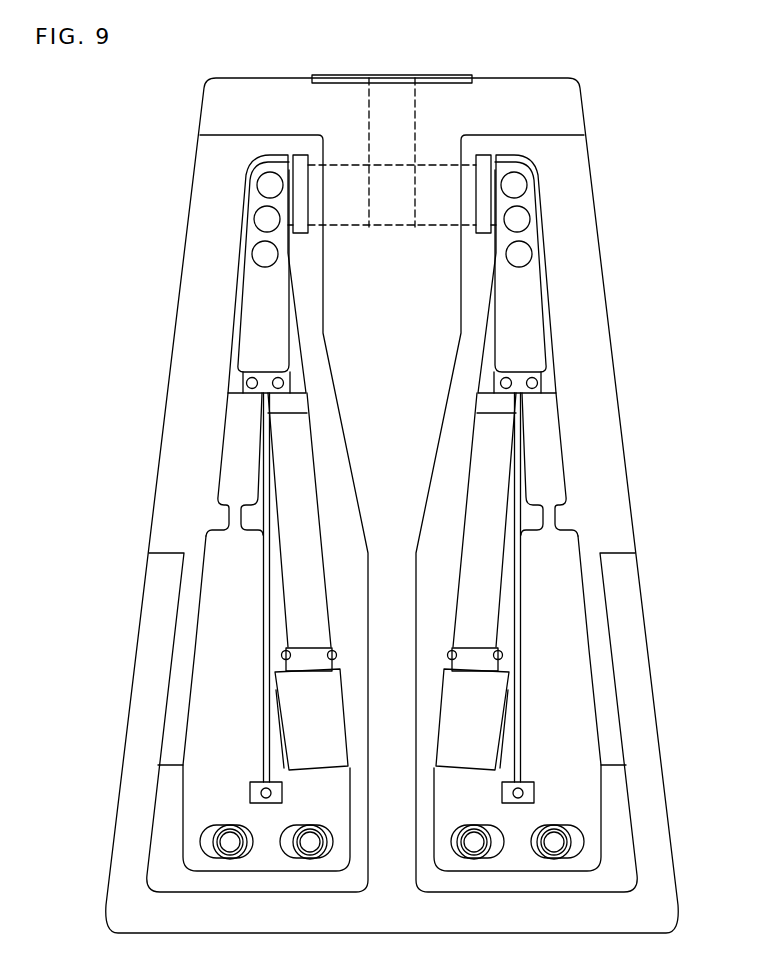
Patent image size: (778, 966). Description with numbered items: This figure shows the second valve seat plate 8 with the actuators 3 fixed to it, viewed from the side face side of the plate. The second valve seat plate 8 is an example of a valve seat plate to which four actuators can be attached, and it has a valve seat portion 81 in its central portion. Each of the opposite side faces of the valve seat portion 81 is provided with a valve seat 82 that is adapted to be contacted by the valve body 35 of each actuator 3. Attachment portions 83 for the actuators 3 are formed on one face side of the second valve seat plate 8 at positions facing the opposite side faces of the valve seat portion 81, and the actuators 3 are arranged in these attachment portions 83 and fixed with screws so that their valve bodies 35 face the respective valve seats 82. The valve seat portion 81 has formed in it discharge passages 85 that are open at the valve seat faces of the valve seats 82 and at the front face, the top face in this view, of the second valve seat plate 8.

The actuator 3 is at (222, 637).
The second valve seat plate 8 is at (628, 492).
The valve body 35 is at (300, 203).
The valve seat portion 81 is at (405, 290).
The valve seat 82 is at (317, 178).
The attachment portion 83 is at (190, 428).
The discharge passage 85 is at (398, 110).